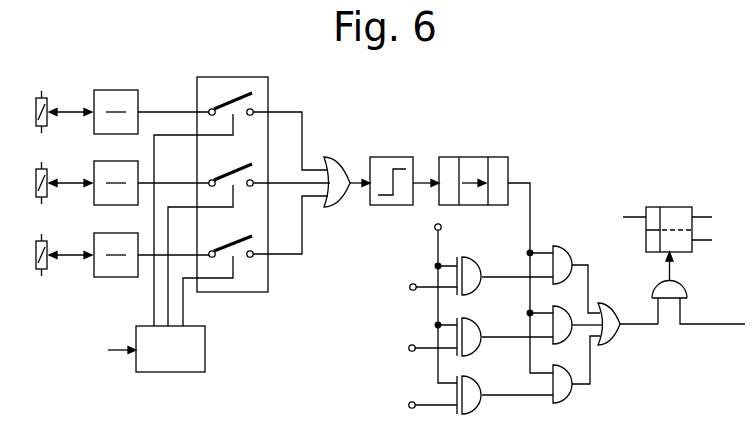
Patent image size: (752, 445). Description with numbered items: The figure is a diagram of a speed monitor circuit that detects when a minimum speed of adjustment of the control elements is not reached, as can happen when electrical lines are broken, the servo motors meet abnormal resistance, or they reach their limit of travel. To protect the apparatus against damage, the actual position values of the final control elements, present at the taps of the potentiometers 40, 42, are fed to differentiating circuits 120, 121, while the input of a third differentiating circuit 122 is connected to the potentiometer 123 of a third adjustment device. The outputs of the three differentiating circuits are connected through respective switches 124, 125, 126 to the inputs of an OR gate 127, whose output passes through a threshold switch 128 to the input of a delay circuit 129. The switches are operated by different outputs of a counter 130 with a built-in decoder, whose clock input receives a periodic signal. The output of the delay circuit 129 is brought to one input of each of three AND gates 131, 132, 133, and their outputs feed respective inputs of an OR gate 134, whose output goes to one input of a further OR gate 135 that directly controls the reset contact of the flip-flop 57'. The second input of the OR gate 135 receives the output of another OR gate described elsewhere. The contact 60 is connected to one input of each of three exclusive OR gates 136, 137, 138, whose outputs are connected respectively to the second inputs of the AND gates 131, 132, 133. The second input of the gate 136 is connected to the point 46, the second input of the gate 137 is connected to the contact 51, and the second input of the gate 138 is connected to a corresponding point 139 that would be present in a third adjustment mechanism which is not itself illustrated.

The potentiometer 40 is at (42, 103).
The potentiometer 42 is at (42, 177).
The potentiometer 123 is at (42, 250).
The differentiating circuit 120 is at (102, 100).
The differentiating circuit 121 is at (100, 194).
The third differentiating circuit 122 is at (102, 270).
The switch 124 is at (237, 98).
The switch 125 is at (237, 166).
The switch 126 is at (237, 235).
The OR gate 127 is at (330, 170).
The threshold switch 128 is at (380, 168).
The delay circuit 129 is at (467, 170).
The counter 130 is at (174, 360).
The contact 60 is at (435, 229).
The point 46 is at (410, 288).
The contact 51 is at (409, 349).
The point 139 is at (409, 406).
The exclusive OR gate 136 is at (470, 268).
The exclusive OR gate 137 is at (470, 330).
The exclusive OR gate 138 is at (470, 390).
The AND gate 131 is at (563, 260).
The AND gate 132 is at (563, 332).
The AND gate 133 is at (565, 395).
The OR gate 134 is at (612, 330).
The OR gate 135 is at (665, 290).
The flip-flop 57' is at (667, 211).